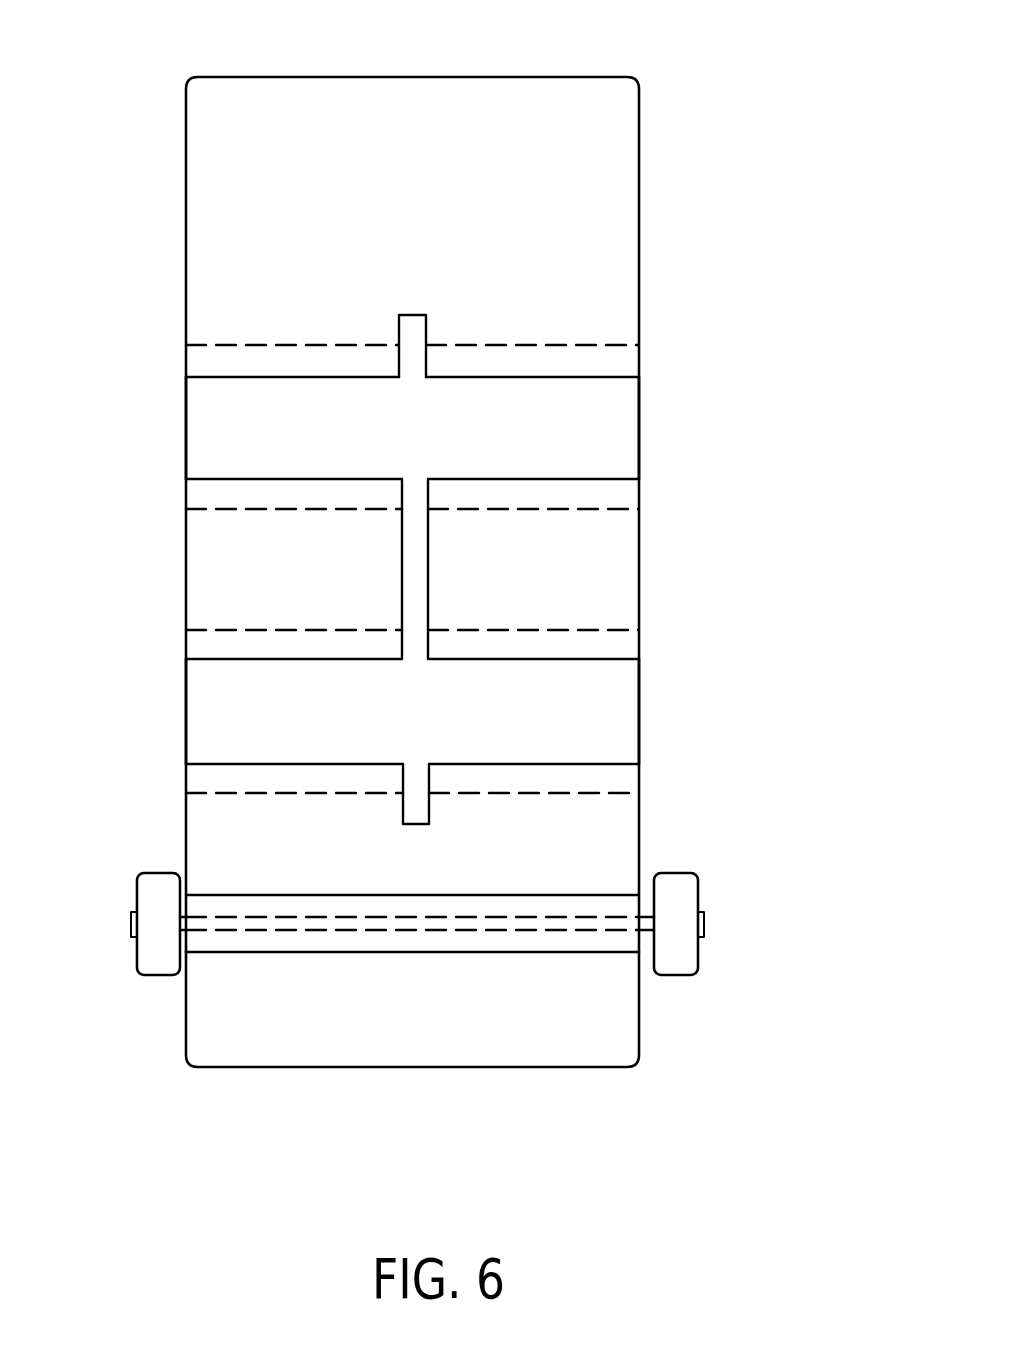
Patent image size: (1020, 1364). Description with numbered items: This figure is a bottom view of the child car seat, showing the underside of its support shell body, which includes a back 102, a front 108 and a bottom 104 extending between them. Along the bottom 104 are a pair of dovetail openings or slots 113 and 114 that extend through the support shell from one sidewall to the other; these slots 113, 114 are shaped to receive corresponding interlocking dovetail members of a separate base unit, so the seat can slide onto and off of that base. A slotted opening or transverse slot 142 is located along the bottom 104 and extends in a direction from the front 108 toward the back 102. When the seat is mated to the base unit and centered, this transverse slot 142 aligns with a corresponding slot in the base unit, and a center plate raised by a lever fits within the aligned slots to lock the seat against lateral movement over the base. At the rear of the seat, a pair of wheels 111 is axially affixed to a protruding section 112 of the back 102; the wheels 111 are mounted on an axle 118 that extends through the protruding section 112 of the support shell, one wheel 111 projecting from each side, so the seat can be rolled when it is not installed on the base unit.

The back 102 is at (423, 1023).
The bottom 104 is at (197, 337).
The front 108 is at (435, 142).
The wheels 111 is at (152, 975).
The protruding section 112 is at (587, 892).
The dovetail slot 113 is at (615, 713).
The dovetail slot 114 is at (610, 430).
The axle 118 is at (333, 930).
The transverse slot 142 is at (413, 332).